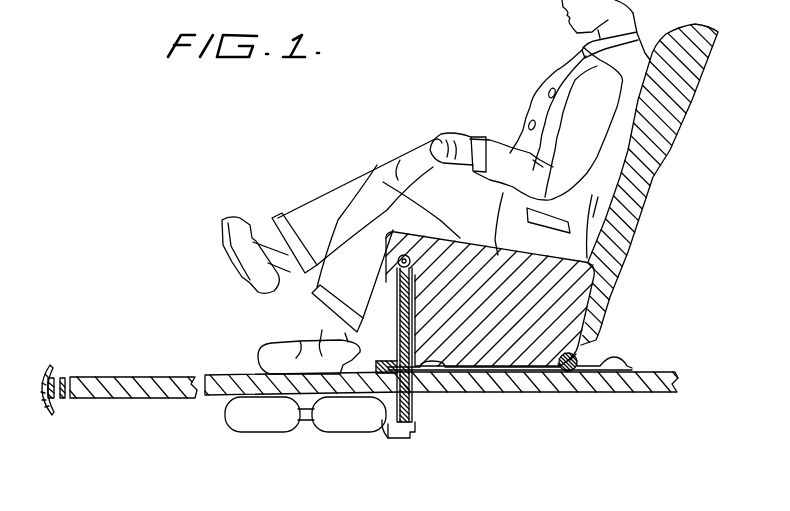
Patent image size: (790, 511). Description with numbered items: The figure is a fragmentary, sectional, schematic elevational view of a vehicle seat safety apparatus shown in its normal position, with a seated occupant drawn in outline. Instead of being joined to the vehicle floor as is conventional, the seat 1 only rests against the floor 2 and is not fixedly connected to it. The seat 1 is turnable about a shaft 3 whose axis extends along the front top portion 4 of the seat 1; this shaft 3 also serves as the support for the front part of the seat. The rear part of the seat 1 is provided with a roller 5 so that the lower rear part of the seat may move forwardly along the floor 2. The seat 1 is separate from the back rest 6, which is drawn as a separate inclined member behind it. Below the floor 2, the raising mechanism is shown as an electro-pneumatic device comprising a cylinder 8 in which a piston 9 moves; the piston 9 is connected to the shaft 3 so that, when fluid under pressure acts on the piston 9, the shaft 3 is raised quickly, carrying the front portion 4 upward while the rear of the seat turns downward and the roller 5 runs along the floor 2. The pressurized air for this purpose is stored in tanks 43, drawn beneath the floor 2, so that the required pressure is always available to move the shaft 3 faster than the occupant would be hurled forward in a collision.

The seat 1 is at (505, 340).
The floor 2 is at (552, 385).
The shaft 3 is at (401, 257).
The front top portion 4 is at (400, 254).
The roller 5 is at (577, 358).
The back rest 6 is at (641, 165).
The cylinder 8 is at (413, 403).
The piston 9 is at (381, 431).
The tanks 43 is at (233, 417).